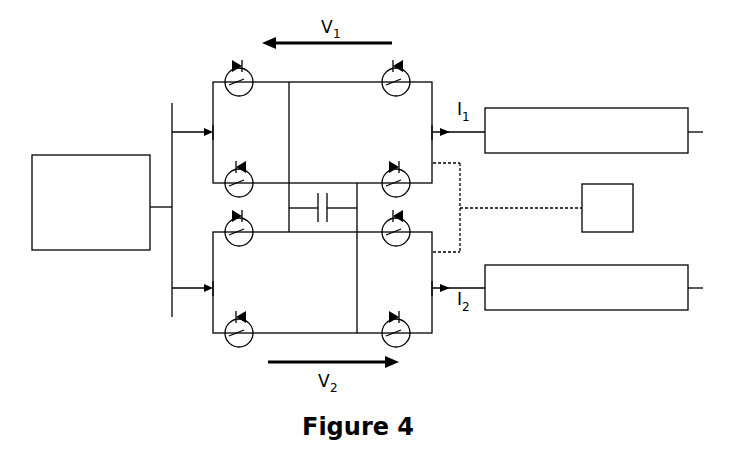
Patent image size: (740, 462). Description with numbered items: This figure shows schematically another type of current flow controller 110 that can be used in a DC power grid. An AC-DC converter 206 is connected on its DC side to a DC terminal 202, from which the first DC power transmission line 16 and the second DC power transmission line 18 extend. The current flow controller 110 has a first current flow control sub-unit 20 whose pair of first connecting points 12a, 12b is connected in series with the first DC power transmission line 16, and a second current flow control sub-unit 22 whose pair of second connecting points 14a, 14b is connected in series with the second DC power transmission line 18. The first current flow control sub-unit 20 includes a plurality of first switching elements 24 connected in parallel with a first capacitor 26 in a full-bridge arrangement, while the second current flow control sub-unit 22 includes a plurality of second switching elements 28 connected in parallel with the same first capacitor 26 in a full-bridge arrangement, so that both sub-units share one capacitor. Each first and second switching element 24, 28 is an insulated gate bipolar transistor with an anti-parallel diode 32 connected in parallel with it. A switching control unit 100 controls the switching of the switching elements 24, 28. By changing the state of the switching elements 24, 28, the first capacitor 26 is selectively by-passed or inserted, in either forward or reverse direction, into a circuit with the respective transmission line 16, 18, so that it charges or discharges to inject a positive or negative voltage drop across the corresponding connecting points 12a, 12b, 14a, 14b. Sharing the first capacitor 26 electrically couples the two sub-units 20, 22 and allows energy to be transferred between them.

The first connecting point 12a is at (208, 137).
The first connecting point 12b is at (435, 128).
The second connecting point 14a is at (208, 280).
The second connecting point 14b is at (433, 294).
The first DC power transmission line 16 is at (568, 130).
The second DC power transmission line 18 is at (568, 287).
The first current flow control sub-unit 20 is at (227, 120).
The second current flow control sub-unit 22 is at (417, 308).
The first switching element 24 is at (248, 86).
The first capacitor 26 is at (322, 196).
The second switching element 28 is at (250, 234).
The anti-parallel diode 32 is at (237, 57).
The switching control unit 100 is at (533, 207).
The current flow controller 110 is at (449, 71).
The DC terminal 202 is at (162, 199).
The AC-DC converter 206 is at (102, 202).